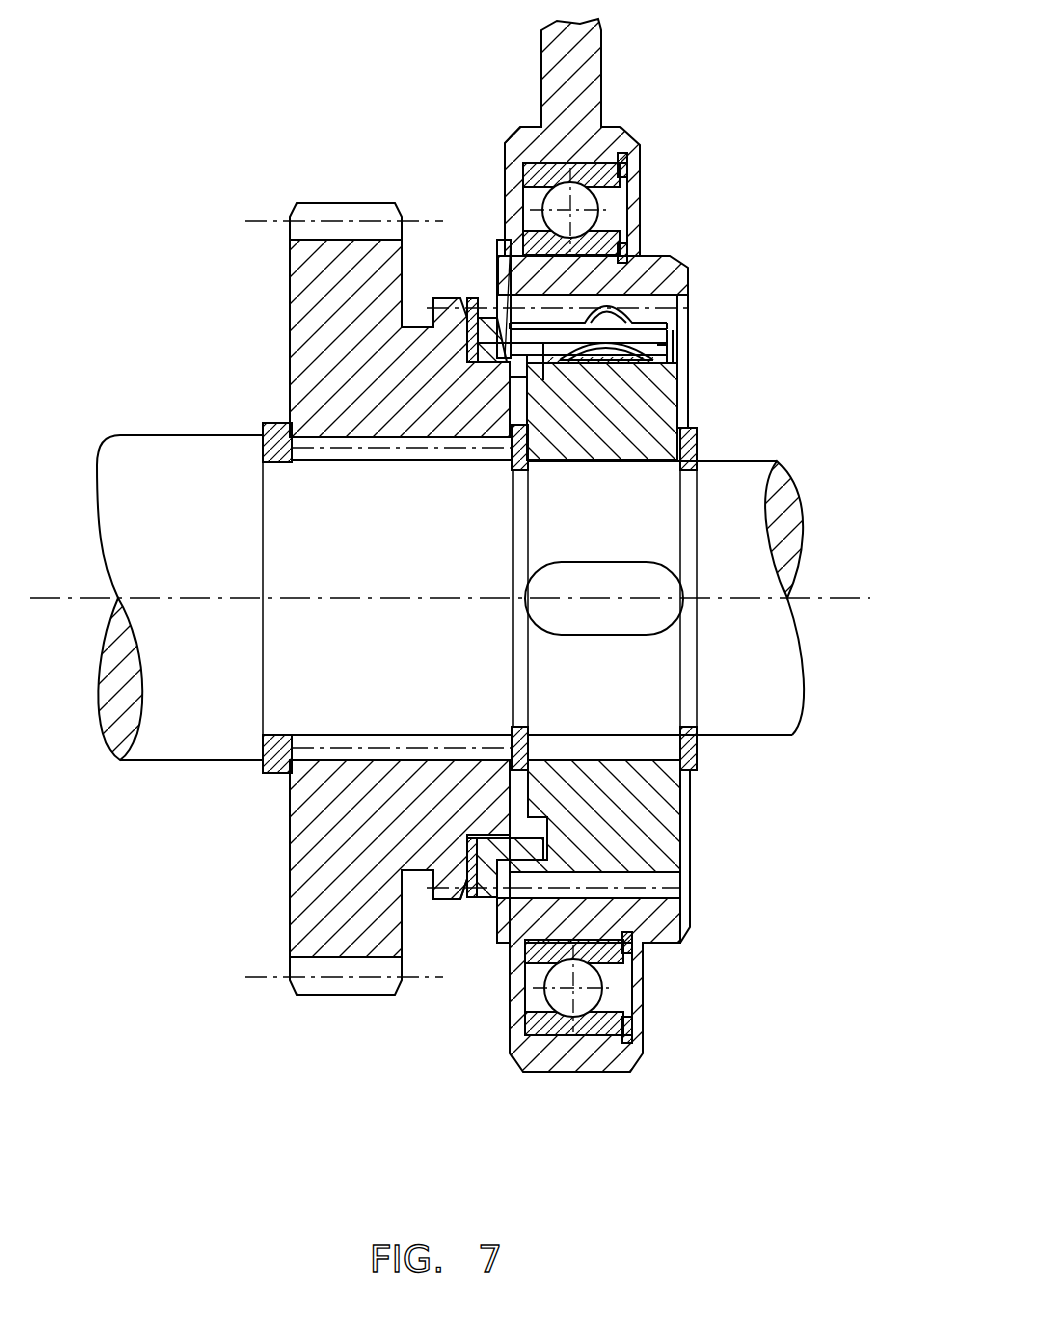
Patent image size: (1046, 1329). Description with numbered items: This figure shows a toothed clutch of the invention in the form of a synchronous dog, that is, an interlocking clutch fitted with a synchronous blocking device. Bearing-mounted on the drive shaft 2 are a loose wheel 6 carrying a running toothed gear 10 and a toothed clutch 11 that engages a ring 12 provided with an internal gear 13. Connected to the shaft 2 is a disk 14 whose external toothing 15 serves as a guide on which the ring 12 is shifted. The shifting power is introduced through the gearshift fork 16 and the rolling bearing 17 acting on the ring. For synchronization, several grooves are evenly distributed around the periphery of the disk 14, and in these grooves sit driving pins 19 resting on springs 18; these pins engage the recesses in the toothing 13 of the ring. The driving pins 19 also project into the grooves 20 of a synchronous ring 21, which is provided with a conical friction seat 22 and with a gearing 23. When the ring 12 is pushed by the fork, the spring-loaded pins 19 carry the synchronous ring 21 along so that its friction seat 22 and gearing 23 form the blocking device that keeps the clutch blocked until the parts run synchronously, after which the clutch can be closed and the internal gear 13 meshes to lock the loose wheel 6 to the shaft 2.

The drive shaft 2 is at (200, 745).
The loose wheel 6 is at (320, 877).
The running toothed gear 10 is at (365, 985).
The toothed clutch 11 is at (453, 875).
The ring 12 is at (672, 927).
The internal gear 13 is at (688, 892).
The disk 14 is at (657, 822).
The external toothing 15 is at (673, 880).
The gearshift fork 16 is at (586, 60).
The ball bearing 17 is at (585, 200).
The springs 18 is at (645, 360).
The driving pins 19 is at (647, 332).
The grooves 20 is at (507, 290).
The synchronous ring 21 is at (480, 343).
The conical friction seat 22 is at (507, 362).
The gearing 23 is at (482, 301).